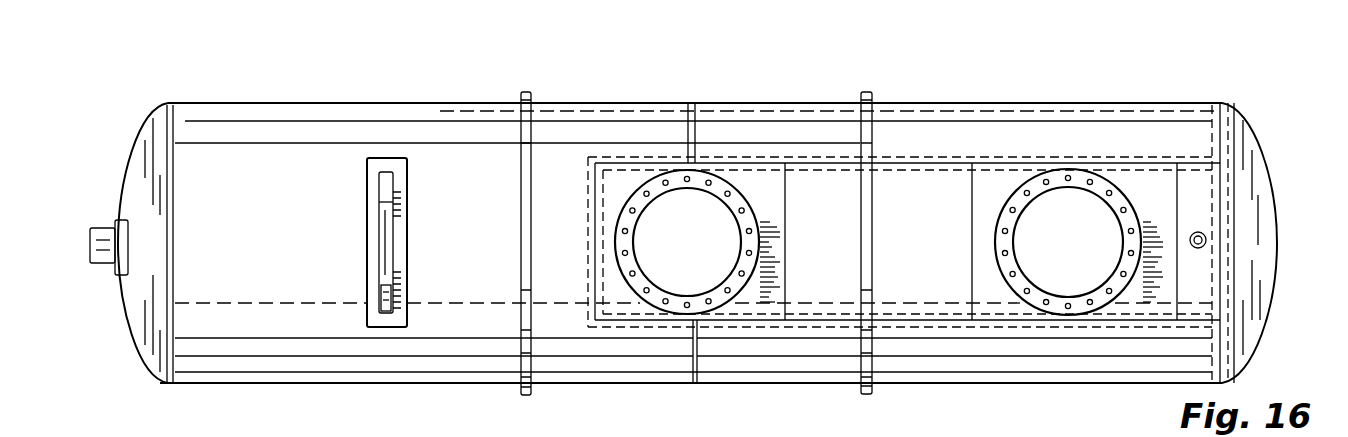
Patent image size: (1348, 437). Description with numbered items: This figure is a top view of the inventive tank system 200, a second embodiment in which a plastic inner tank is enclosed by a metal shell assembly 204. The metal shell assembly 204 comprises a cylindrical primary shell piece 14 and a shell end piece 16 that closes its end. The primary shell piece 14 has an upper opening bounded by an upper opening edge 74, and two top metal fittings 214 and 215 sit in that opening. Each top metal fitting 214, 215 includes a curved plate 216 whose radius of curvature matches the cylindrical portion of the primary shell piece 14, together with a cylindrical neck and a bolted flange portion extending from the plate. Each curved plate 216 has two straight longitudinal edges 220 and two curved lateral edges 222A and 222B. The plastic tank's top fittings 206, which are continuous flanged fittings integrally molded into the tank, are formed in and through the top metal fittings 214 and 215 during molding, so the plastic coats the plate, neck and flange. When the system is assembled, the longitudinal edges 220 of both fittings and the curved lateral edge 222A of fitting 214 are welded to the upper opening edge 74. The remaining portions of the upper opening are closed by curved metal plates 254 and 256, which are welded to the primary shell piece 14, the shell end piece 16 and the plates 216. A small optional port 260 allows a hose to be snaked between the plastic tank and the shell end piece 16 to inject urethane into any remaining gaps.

The tank system 200 is at (1048, 88).
The metal shell assembly 204 is at (345, 115).
The primary shell piece 14 is at (428, 113).
The top metal fitting 214 is at (632, 177).
The top metal fitting 215 is at (988, 182).
The straight longitudinal edges 220 is at (680, 163).
The top fittings 206 is at (735, 200).
The curved lateral edge 222A is at (593, 242).
The curved lateral edge 222B is at (785, 228).
The curved plate 216 is at (610, 316).
The curved metal plate 254 is at (872, 272).
The upper opening edge 74 is at (908, 317).
The shell end piece 16 is at (1237, 205).
The port 260 is at (1205, 248).
The curved metal plate 256 is at (1195, 283).